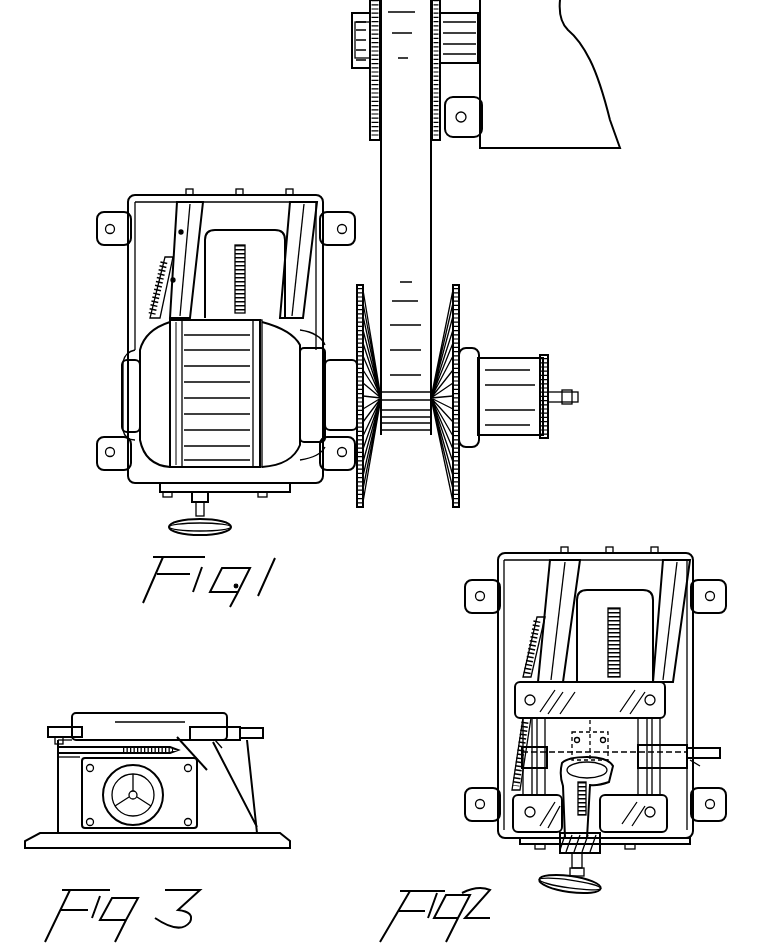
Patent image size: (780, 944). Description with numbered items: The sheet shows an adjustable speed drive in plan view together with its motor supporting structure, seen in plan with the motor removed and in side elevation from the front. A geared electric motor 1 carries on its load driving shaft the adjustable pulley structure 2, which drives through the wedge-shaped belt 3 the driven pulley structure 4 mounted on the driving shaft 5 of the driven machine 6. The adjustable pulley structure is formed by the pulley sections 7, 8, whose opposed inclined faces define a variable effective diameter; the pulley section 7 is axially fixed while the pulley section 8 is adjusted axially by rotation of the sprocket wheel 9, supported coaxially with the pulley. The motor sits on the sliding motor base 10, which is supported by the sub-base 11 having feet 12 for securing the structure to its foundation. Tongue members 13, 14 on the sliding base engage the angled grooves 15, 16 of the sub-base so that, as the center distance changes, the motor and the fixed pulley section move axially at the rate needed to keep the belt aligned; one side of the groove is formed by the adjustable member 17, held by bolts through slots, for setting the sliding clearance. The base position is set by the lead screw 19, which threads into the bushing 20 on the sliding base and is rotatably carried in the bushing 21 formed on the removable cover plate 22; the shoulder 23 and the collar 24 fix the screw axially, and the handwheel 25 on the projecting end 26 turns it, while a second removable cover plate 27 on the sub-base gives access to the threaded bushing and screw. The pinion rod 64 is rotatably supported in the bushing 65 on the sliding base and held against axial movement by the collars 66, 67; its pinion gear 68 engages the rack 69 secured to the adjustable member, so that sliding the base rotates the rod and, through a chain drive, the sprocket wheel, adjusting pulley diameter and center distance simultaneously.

In FIG. 1, the geared electric motor 1 is at (214, 384).
In FIG. 1, the adjustable pulley structure 2 is at (408, 408).
In FIG. 1, the belt 3 is at (431, 217).
In FIG. 1, the pulley structure 4 is at (370, 110).
In FIG. 1, the driving shaft 5 is at (352, 33).
In FIG. 1, the driven machine 6 is at (572, 28).
In FIG. 1, the pulley section 7 is at (362, 505).
In FIG. 1, the pulley section 8 is at (452, 502).
In FIG. 1, the sprocket wheel 9 is at (548, 424).
In FIG. 1, the sliding motor base 10 is at (133, 330).
In FIG. 2, the sliding motor base 10 is at (514, 697).
In FIG. 3, the sliding motor base 10 is at (190, 713).
In FIG. 1, the sub-base 11 is at (127, 285).
In FIG. 2, the sub-base 11 is at (497, 636).
In FIG. 3, the sub-base 11 is at (257, 798).
In FIG. 1, the feet 12 is at (97, 224).
In FIG. 2, the feet 12 is at (465, 598).
In FIG. 3, the feet 12 is at (290, 845).
In FIG. 3, the tongue member 13 is at (80, 750).
In FIG. 3, the tongue member 14 is at (185, 750).
In FIG. 1, the groove 15 is at (186, 226).
In FIG. 2, the groove 15 is at (565, 582).
In FIG. 3, the groove 15 is at (80, 752).
In FIG. 1, the groove 16 is at (298, 236).
In FIG. 2, the groove 16 is at (672, 574).
In FIG. 3, the groove 16 is at (180, 740).
In FIG. 1, the adjustable member 17 is at (178, 220).
In FIG. 2, the adjustable member 17 is at (545, 580).
In FIG. 3, the adjustable member 17 is at (58, 750).
In FIG. 1, the lead screw 19 is at (246, 280).
In FIG. 2, the lead screw 19 is at (620, 636).
In FIG. 2, the bushing 20 is at (604, 745).
In FIG. 2, the bushing 21 is at (566, 850).
In FIG. 1, the removable cover plate 22 is at (162, 494).
In FIG. 2, the removable cover plate 22 is at (530, 845).
In FIG. 3, the removable cover plate 22 is at (82, 785).
In FIG. 2, the shoulder 23 is at (594, 812).
In FIG. 2, the collar 24 is at (584, 856).
In FIG. 1, the handwheel 25 is at (228, 530).
In FIG. 2, the handwheel 25 is at (600, 889).
In FIG. 3, the handwheel 25 is at (156, 797).
In FIG. 1, the projecting end 26 is at (206, 504).
In FIG. 2, the projecting end 26 is at (570, 875).
In FIG. 1, the removable cover plate 27 is at (292, 194).
In FIG. 2, the removable cover plate 27 is at (622, 552).
In FIG. 2, the pinion rod 64 is at (700, 748).
In FIG. 3, the pinion rod 64 is at (263, 732).
In FIG. 2, the bushing 65 is at (668, 769).
In FIG. 3, the bushing 65 is at (230, 752).
In FIG. 2, the collar 66 is at (510, 740).
In FIG. 2, the collar 67 is at (676, 742).
In FIG. 3, the collar 67 is at (240, 727).
In FIG. 2, the pinion gear 68 is at (521, 755).
In FIG. 3, the pinion gear 68 is at (62, 727).
In FIG. 2, the rack 69 is at (524, 665).
In FIG. 3, the rack 69 is at (55, 741).